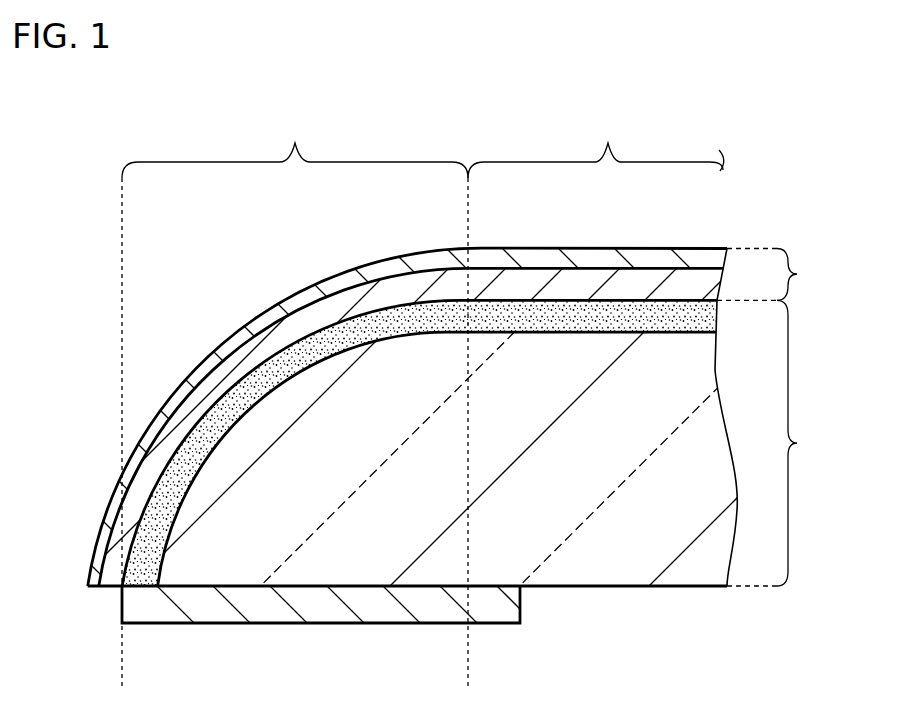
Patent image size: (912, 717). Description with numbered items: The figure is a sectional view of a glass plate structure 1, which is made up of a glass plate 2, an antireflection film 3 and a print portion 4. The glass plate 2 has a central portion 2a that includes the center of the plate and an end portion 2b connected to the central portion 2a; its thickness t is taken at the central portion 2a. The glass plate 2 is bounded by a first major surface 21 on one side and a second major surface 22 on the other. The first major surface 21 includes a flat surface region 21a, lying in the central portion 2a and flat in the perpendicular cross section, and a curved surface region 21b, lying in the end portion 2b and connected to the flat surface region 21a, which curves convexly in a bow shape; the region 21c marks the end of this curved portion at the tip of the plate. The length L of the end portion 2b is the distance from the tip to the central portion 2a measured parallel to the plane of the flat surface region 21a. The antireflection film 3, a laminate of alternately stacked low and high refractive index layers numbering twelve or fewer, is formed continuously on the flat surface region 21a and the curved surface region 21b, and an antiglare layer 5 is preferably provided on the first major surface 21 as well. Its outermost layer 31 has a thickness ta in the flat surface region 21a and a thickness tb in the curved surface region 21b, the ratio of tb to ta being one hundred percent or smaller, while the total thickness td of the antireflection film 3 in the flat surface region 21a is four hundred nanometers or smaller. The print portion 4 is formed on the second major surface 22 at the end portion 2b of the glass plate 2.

The glass plate structure 1 is at (84, 281).
The glass plate 2 is at (514, 450).
The central portion 2a is at (596, 403).
The end portion 2b is at (295, 403).
The antireflection film 3 is at (768, 275).
The print portion 4 is at (133, 603).
The antiglare layer 5 is at (408, 320).
The first major surface 21 is at (497, 300).
The flat surface region 21a is at (548, 300).
The curved surface region 21b is at (290, 347).
The end portion of intermediate layer 21c is at (120, 585).
The second major surface 22 is at (626, 590).
The outermost layer 31 is at (598, 257).
The thickness of the glass plate t is at (575, 301).
The thickness of the outermost layer in the flat surface region ta is at (650, 284).
The thickness of the outermost layer in the curved surface region tb is at (224, 382).
The total thickness of the antireflection film td is at (695, 300).
The length of the end portion L is at (123, 668).